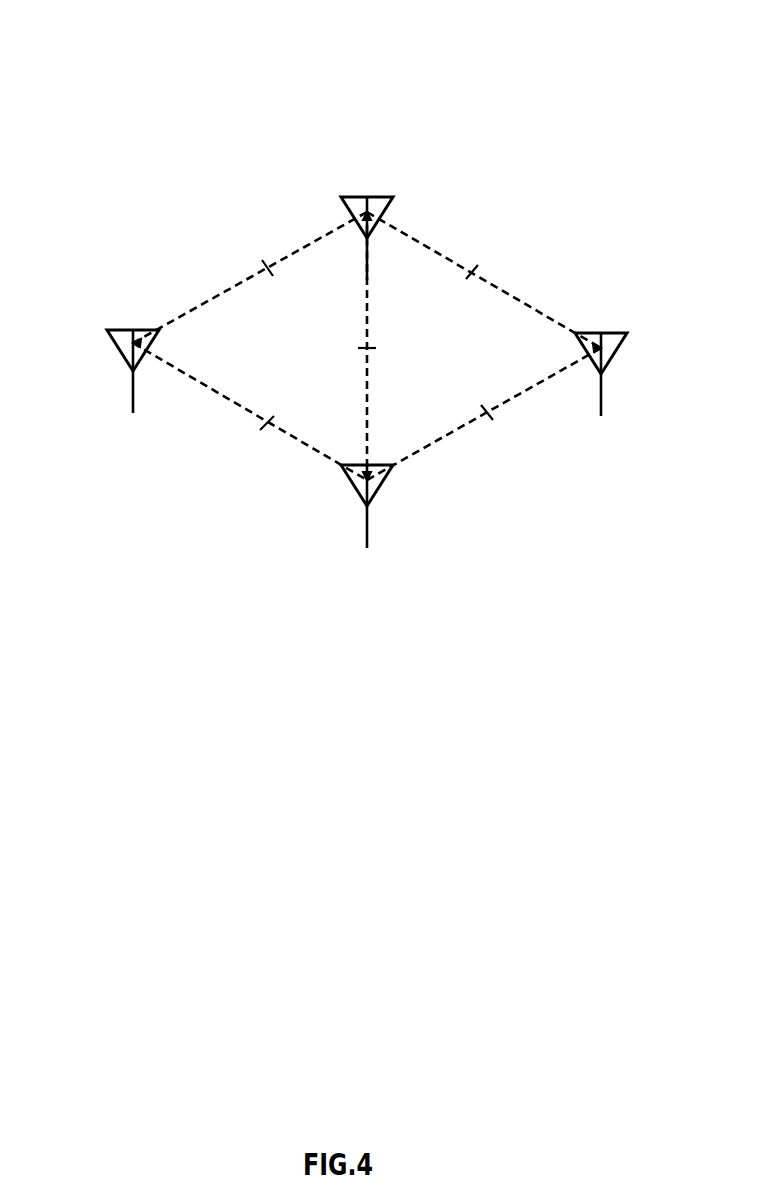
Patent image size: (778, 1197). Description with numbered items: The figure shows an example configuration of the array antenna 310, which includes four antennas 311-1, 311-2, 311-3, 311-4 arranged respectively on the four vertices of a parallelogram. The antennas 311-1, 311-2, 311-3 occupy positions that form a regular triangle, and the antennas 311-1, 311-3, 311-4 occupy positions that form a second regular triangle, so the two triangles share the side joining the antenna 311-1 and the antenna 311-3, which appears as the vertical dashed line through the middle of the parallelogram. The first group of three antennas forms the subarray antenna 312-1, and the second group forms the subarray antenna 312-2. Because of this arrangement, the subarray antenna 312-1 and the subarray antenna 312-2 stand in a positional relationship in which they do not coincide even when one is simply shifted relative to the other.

The array antenna 310 is at (388, 38).
The antenna 311-1 is at (378, 485).
The antenna 311-2 is at (127, 330).
The antenna 311-3 is at (407, 183).
The antenna 311-4 is at (645, 318).
The subarray antenna 312-1 is at (207, 389).
The subarray antenna 312-2 is at (537, 274).